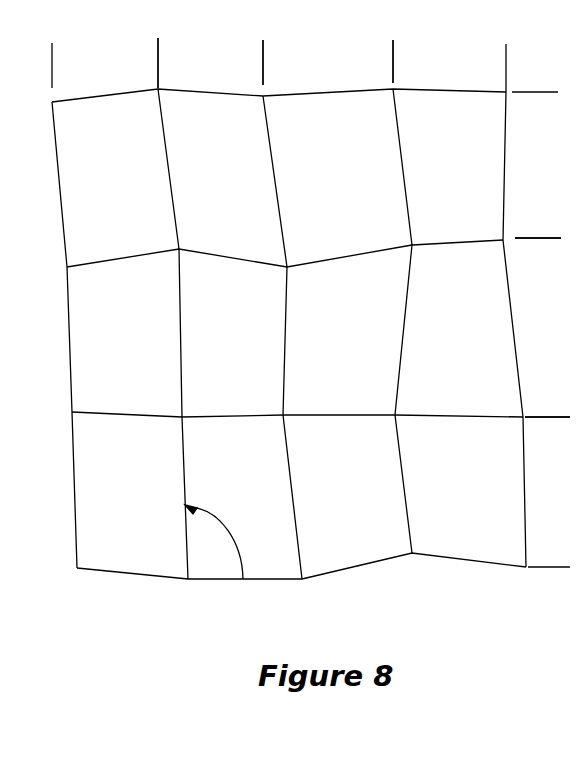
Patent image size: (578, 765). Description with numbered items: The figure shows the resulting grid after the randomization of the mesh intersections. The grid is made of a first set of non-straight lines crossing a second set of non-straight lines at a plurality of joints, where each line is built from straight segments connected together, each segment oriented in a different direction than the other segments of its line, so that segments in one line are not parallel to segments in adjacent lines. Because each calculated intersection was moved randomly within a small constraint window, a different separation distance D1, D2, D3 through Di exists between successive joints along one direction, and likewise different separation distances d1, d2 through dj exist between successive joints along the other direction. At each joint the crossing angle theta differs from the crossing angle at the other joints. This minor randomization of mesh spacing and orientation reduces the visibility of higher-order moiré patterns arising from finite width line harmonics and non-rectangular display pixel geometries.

The separation distance D1 is at (105, 63).
The separation distance D2 is at (210, 63).
The separation distance D3 is at (328, 62).
The separation distance Di is at (449, 66).
The separation distance d1 is at (536, 165).
The separation distance d2 is at (542, 327).
The separation distance dj is at (547, 492).
The crossing angle theta is at (219, 542).